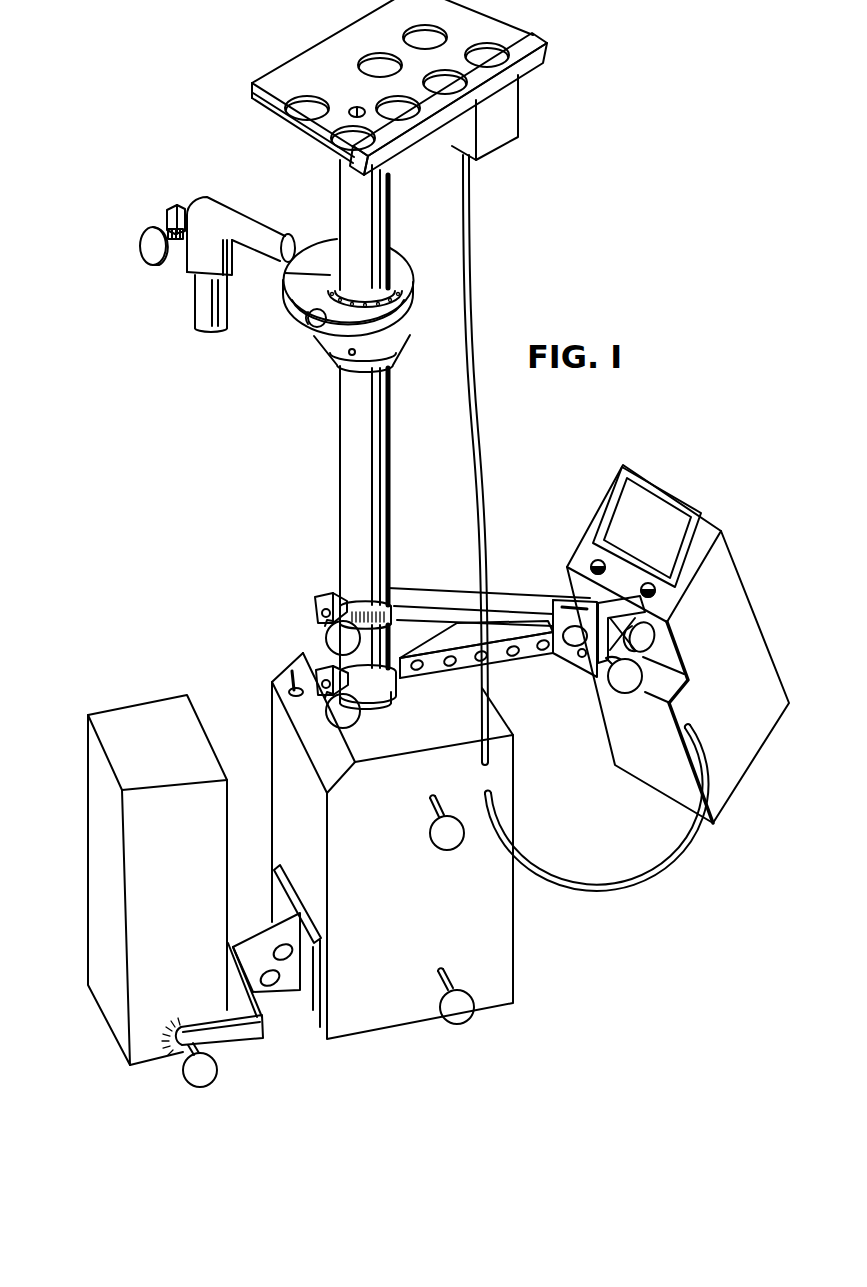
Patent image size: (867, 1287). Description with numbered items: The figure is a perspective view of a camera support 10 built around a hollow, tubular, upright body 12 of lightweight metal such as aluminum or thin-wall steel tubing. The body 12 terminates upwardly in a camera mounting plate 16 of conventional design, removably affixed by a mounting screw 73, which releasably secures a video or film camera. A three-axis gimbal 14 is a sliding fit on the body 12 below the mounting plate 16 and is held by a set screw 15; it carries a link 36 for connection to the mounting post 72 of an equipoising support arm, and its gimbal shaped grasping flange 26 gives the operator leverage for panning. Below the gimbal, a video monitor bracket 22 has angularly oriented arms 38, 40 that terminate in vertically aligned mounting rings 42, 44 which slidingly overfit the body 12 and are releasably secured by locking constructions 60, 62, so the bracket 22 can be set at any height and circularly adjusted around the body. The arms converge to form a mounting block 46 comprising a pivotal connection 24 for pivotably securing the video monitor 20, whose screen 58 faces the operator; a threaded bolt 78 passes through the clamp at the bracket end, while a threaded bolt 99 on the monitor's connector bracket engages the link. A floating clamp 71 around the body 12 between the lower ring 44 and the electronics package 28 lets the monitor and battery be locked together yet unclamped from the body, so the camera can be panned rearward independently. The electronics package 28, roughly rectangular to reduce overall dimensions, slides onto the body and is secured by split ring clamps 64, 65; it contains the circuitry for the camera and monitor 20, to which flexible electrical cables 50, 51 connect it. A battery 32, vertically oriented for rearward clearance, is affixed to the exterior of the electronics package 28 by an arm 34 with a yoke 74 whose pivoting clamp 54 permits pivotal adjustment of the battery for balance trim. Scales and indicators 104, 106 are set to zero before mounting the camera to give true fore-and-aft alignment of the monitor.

The camera support 10 is at (330, 462).
The tubular upright body 12 is at (381, 474).
The three-axis gimbal 14 is at (421, 297).
The set screw 15 is at (350, 357).
The camera mounting plate 16 is at (548, 55).
The video monitor 20 is at (730, 595).
The video monitor bracket 22 is at (437, 587).
The pivotal connection 24 is at (620, 585).
The gimbal shaped grasping flange 26 is at (308, 320).
The electronics package 28 is at (506, 950).
The battery 32 is at (100, 858).
The arm 34 is at (288, 1000).
The link 36 is at (240, 200).
The arm 38 is at (530, 610).
The arm 40 is at (530, 662).
The mounting ring 42 is at (367, 600).
The mounting ring 44 is at (400, 692).
The mounting block 46 is at (572, 648).
The flexible electrical cable 50 is at (471, 238).
The flexible electrical cable 51 is at (665, 862).
The pivoting clamp 54 is at (193, 1074).
The screen 58 is at (672, 526).
The locking construction 60 is at (328, 630).
The locking construction 62 is at (335, 722).
The split ring clamp 64 is at (462, 1015).
The split ring clamp 65 is at (448, 835).
The floating clamp 71 is at (385, 706).
The mounting post 72 is at (195, 300).
The mounting screw 73 is at (357, 106).
The yoke 74 is at (250, 1040).
The threaded bolt 78 is at (627, 694).
The threaded bolt 99 is at (650, 637).
The scale and indicator 104 is at (183, 1022).
The scale and indicator 106 is at (347, 595).